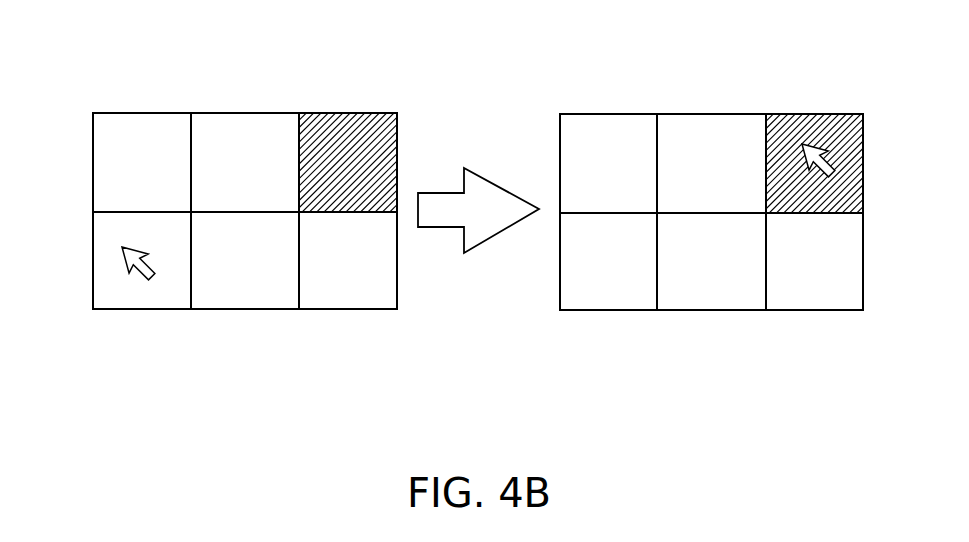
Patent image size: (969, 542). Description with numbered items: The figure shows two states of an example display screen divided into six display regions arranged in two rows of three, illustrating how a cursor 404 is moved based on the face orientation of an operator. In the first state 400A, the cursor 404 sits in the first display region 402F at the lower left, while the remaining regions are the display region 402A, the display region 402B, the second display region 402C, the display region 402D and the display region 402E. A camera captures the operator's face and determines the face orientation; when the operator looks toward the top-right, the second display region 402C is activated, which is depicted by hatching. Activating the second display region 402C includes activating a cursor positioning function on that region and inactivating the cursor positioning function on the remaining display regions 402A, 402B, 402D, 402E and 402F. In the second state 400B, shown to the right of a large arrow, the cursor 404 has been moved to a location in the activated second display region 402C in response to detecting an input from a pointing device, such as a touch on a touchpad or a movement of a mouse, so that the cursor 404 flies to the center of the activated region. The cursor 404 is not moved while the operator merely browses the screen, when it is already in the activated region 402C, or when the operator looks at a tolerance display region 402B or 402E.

The first state of display screen 400A is at (372, 398).
The second state of display screen 400B is at (800, 398).
The display region 402A is at (140, 135).
The tolerance display region 402B is at (242, 135).
The second display region 402C is at (343, 140).
The display region 402D is at (353, 278).
The tolerance display region 402E is at (246, 278).
The first display region 402F is at (160, 278).
The cursor 404 is at (127, 272).